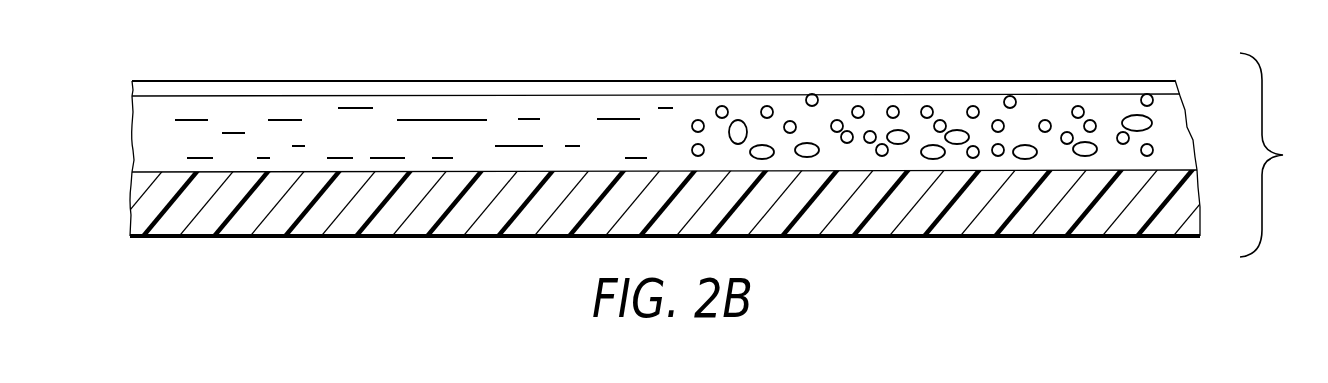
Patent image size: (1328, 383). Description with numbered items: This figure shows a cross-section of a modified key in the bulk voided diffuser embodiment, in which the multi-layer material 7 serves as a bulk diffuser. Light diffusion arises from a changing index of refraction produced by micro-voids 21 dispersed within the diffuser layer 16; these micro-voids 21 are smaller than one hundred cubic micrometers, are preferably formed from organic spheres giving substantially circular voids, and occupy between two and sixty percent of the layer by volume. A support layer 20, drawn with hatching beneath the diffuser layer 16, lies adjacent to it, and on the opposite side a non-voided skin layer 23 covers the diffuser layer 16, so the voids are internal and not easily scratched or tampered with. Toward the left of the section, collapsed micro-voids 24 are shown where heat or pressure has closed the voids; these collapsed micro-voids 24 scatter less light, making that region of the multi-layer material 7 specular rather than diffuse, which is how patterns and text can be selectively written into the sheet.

The multi-layer material 7 is at (1272, 155).
The diffuser layer 16 is at (1037, 107).
The support layer 20 is at (153, 188).
The micro-voids 21 is at (765, 105).
The non-voided skin layer 23 is at (568, 80).
The collapsed micro-voids 24 is at (283, 118).